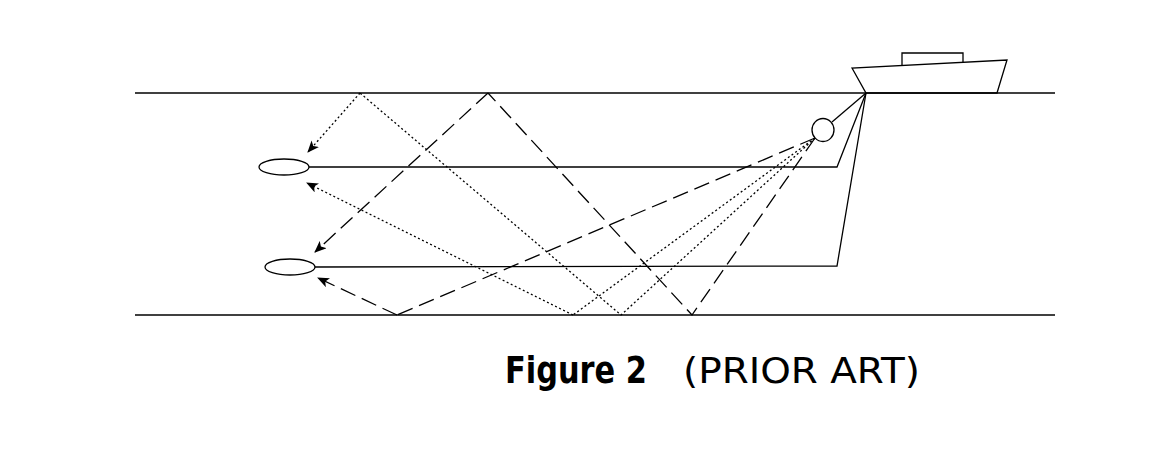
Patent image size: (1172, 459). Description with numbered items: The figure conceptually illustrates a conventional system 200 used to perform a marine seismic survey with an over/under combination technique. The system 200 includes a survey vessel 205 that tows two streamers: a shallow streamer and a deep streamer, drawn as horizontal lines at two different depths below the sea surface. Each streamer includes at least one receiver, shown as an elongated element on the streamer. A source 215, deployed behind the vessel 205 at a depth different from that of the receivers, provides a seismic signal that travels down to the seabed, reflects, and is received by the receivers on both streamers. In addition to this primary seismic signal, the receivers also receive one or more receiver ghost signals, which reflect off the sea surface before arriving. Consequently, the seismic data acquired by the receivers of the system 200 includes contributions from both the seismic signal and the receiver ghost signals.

The conventional system 200 is at (1082, 133).
The survey vessel 205 is at (855, 77).
The source 215 is at (835, 132).